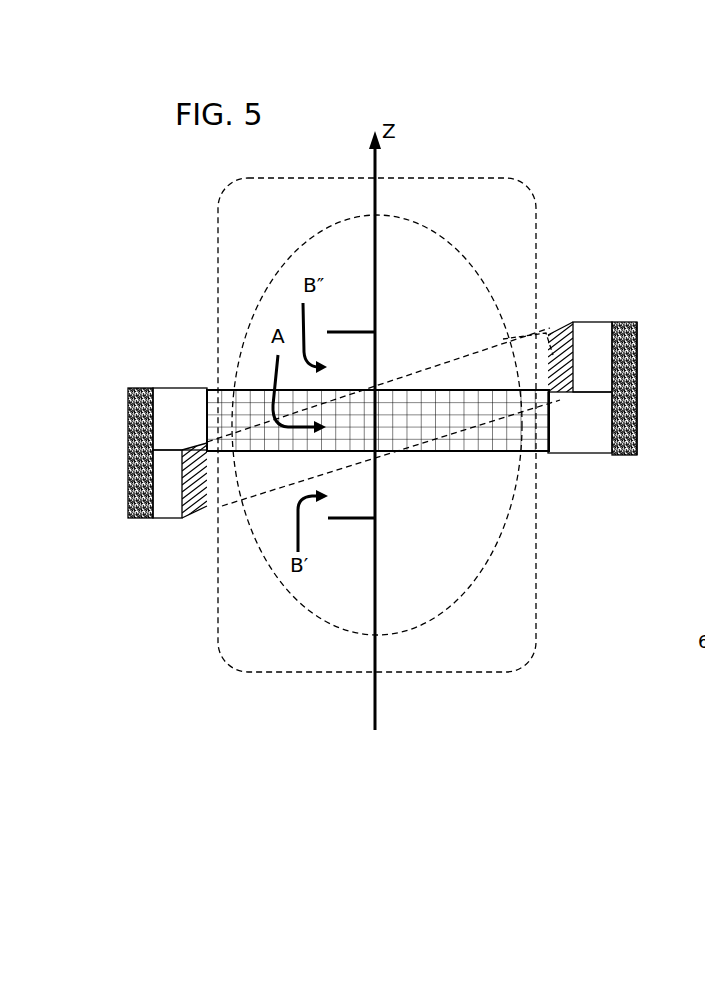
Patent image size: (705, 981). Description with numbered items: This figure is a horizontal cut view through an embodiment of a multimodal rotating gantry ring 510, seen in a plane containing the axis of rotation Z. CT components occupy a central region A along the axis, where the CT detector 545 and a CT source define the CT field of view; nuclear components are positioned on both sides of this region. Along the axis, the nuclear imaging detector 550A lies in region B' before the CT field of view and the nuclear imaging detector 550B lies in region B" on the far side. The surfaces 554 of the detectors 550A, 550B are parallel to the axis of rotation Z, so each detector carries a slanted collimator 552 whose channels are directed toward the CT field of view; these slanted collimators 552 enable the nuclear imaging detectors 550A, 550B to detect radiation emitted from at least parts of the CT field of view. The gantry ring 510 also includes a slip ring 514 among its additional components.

The rotating gantry ring 510 is at (483, 72).
The slip ring 514 is at (637, 415).
The CT detector 545 is at (525, 437).
The nuclear imaging detector 550A is at (164, 505).
The nuclear imaging detector 550B is at (590, 345).
The slanted collimator 552 is at (563, 320).
The surface of detector 554 is at (560, 357).